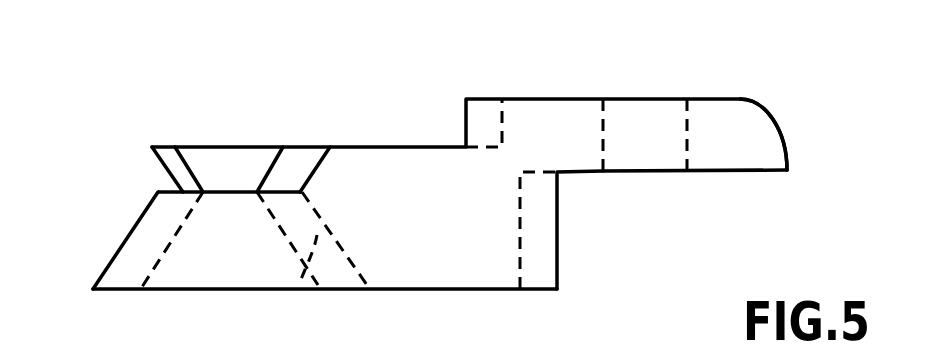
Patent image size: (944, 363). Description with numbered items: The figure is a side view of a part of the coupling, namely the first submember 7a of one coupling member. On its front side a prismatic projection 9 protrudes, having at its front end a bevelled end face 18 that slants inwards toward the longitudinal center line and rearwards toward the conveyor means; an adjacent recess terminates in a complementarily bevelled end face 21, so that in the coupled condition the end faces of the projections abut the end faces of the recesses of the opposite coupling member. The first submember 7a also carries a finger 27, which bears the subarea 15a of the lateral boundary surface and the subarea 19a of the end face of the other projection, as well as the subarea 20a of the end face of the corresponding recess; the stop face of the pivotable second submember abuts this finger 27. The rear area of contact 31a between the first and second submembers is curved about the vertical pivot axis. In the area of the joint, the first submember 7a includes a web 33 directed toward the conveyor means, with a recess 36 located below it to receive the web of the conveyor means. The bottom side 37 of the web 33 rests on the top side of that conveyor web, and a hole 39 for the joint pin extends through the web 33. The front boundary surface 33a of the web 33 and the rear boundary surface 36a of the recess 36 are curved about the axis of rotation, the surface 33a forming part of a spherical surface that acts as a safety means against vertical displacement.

The first submember 7a is at (488, 245).
The prismatic projection 9 is at (223, 232).
The subarea of the lateral boundary surface 15a is at (239, 165).
The end face 18 is at (140, 252).
The subarea of the end face 19a is at (166, 157).
The subarea of the end face of the recess 20a is at (303, 160).
The end face 21 is at (302, 298).
The finger 27 is at (210, 160).
The rear area of contact 31a is at (487, 116).
The web 33 is at (575, 122).
The front boundary surface of the web 33a is at (780, 127).
The recess 36 is at (582, 210).
The rear boundary surface of the recess 36a is at (535, 245).
The bottom side of the web 37 is at (595, 177).
The hole 39 is at (655, 118).